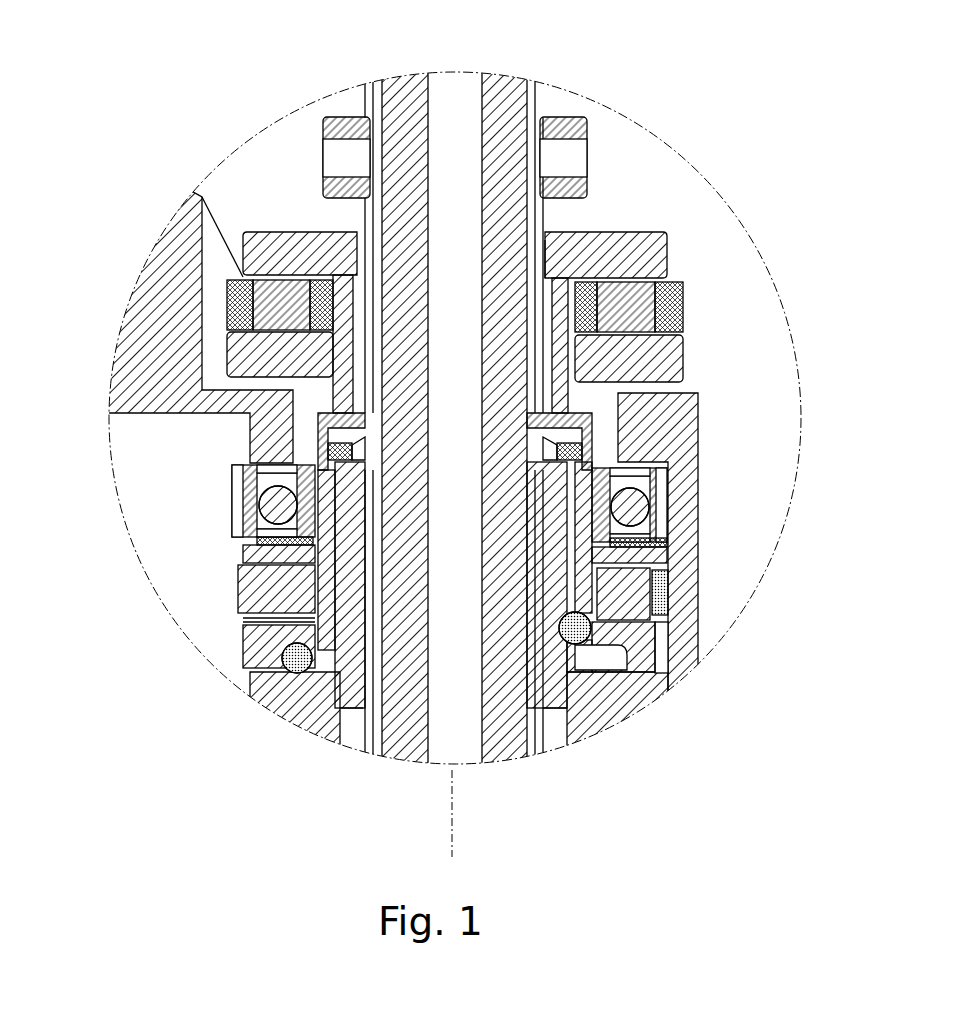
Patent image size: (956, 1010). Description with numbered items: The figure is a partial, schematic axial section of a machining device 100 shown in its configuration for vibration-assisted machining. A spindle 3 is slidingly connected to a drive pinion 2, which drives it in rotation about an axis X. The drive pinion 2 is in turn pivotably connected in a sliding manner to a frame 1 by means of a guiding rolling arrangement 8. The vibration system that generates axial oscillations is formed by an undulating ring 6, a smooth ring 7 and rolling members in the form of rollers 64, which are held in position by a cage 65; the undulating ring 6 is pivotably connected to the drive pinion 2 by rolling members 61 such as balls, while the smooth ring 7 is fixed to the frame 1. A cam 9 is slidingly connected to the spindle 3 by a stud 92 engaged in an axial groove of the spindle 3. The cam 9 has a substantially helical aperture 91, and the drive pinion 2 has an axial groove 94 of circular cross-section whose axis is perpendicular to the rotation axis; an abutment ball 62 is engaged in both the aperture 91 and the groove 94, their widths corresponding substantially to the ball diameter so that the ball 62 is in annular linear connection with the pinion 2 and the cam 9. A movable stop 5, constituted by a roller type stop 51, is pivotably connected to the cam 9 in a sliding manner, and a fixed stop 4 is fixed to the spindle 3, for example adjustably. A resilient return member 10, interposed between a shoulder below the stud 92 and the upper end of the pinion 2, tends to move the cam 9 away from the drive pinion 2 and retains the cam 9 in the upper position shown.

The machining device 100 is at (276, 86).
The frame 1 is at (157, 282).
The drive pinion 2 is at (620, 707).
The spindle 3 is at (402, 90).
The fixed stop 4 is at (586, 188).
The movable stop 5 is at (640, 358).
The roller type stop 51 is at (683, 302).
The undulating ring 6 is at (697, 663).
The rolling members 61 is at (293, 677).
The abutment ball 62 is at (645, 675).
The rollers 64 is at (670, 620).
The cage 65 is at (240, 658).
The smooth ring 7 is at (665, 553).
The guiding rolling arrangement 8 is at (240, 463).
The cam 9 is at (667, 543).
The aperture 91 is at (655, 690).
The stud 92 is at (592, 432).
The axial groove 94 is at (565, 637).
The resilient return member 10 is at (320, 438).
The axis X is at (452, 806).